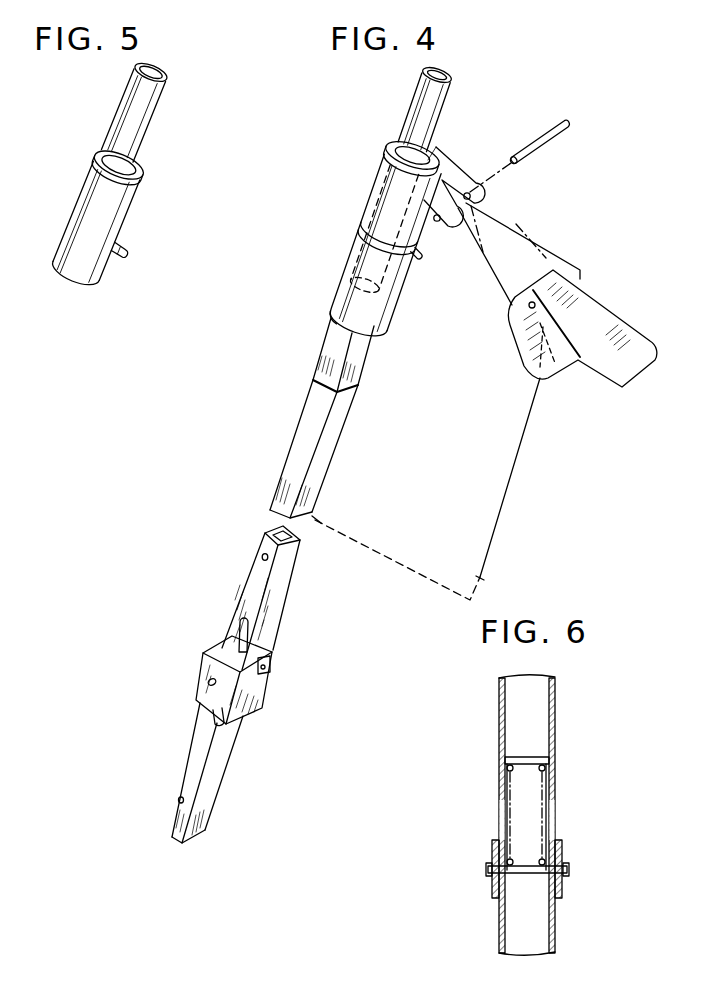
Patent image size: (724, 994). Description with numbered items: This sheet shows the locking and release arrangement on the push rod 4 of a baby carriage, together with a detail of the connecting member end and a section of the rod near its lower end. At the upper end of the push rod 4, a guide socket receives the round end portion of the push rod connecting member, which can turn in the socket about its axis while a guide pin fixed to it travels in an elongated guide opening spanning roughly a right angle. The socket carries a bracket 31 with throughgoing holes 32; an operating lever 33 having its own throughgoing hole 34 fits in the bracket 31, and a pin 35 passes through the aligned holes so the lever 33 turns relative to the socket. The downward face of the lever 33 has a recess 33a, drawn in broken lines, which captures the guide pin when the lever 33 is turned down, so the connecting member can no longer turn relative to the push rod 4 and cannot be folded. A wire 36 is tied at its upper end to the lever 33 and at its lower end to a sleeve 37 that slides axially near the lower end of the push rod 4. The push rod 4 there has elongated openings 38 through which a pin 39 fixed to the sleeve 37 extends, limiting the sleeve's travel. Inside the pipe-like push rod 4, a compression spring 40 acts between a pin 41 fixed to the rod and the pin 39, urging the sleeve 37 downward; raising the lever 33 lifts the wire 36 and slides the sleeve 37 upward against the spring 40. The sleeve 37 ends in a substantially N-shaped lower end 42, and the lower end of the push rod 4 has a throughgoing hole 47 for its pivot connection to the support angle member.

In FIG. 4, the push rod 4 is at (302, 438).
In FIG. 6, the push rod 4 is at (556, 720).
In FIG. 4, the bracket 31 is at (469, 174).
In FIG. 4, the throughgoing hole 32 is at (472, 196).
In FIG. 4, the operating lever 33 is at (624, 313).
In FIG. 4, the recess 33a is at (528, 360).
In FIG. 4, the throughgoing hole 34 is at (529, 309).
In FIG. 4, the pin 35 is at (556, 143).
In FIG. 4, the wire 36 is at (283, 617).
In FIG. 4, the sleeve 37 is at (190, 672).
In FIG. 6, the sleeve 37 is at (565, 850).
In FIG. 4, the elongated openings 38 is at (238, 628).
In FIG. 6, the elongated openings 38 is at (500, 818).
In FIG. 4, the pin 39 is at (208, 684).
In FIG. 6, the pin 39 is at (490, 872).
In FIG. 4, the compression spring 40 is at (262, 557).
In FIG. 6, the compression spring 40 is at (548, 768).
In FIG. 6, the pin 41 is at (520, 762).
In FIG. 4, the lower end of sleeve 42 is at (212, 712).
In FIG. 4, the throughgoing hole 47 is at (178, 803).